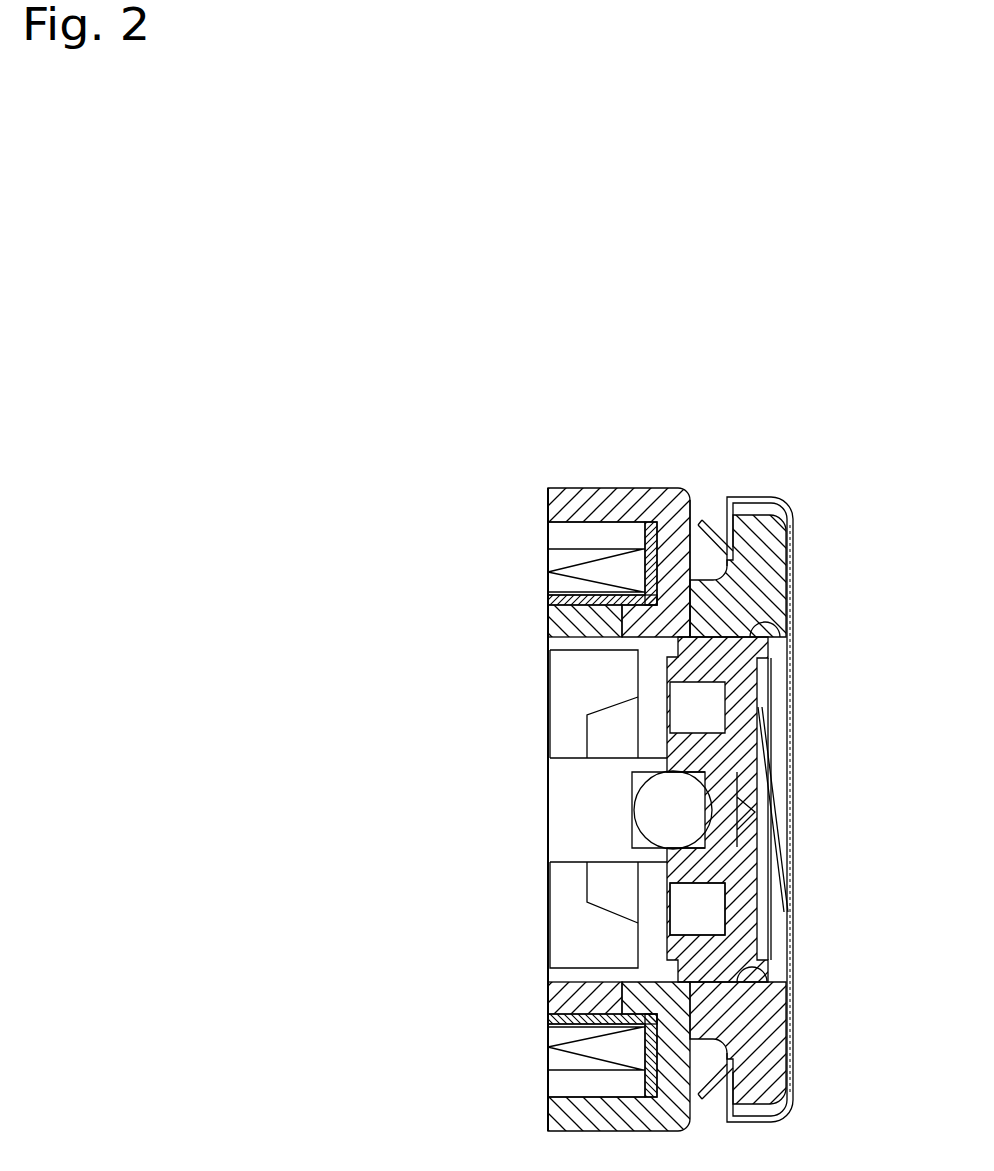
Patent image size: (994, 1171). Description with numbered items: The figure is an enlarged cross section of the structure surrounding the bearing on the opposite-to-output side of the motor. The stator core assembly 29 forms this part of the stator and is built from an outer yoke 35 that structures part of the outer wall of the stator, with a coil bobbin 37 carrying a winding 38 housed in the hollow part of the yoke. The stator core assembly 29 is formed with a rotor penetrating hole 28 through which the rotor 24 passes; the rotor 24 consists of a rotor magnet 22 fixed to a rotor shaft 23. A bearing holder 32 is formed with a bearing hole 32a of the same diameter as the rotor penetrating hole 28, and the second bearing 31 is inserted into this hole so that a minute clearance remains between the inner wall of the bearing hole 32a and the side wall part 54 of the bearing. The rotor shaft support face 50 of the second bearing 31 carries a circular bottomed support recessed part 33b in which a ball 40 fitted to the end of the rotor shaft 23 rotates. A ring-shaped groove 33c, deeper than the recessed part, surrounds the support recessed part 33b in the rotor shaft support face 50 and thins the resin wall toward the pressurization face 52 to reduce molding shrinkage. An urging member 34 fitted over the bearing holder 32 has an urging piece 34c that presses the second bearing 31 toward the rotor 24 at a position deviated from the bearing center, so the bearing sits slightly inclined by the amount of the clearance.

The stator core assembly 29 is at (603, 477).
The outer yoke 35 is at (648, 488).
The coil bobbin 37 is at (668, 542).
The winding 38 is at (568, 558).
The urging member 34 is at (787, 513).
The bearing holder 32 is at (770, 587).
The side wall part 54 is at (770, 618).
The second bearing 31 is at (740, 680).
The rotor penetrating hole 28 is at (547, 660).
The rotor 24 is at (445, 672).
The rotor magnet 22 is at (570, 702).
The rotor shaft 23 is at (583, 782).
The support recessed part 33b is at (745, 752).
The urging piece 34c is at (775, 790).
The ball 40 is at (692, 822).
The pressurization face 52 is at (760, 920).
The bearing hole 32a is at (770, 977).
The rotor shaft support face 50 is at (690, 857).
The groove 33c is at (677, 890).